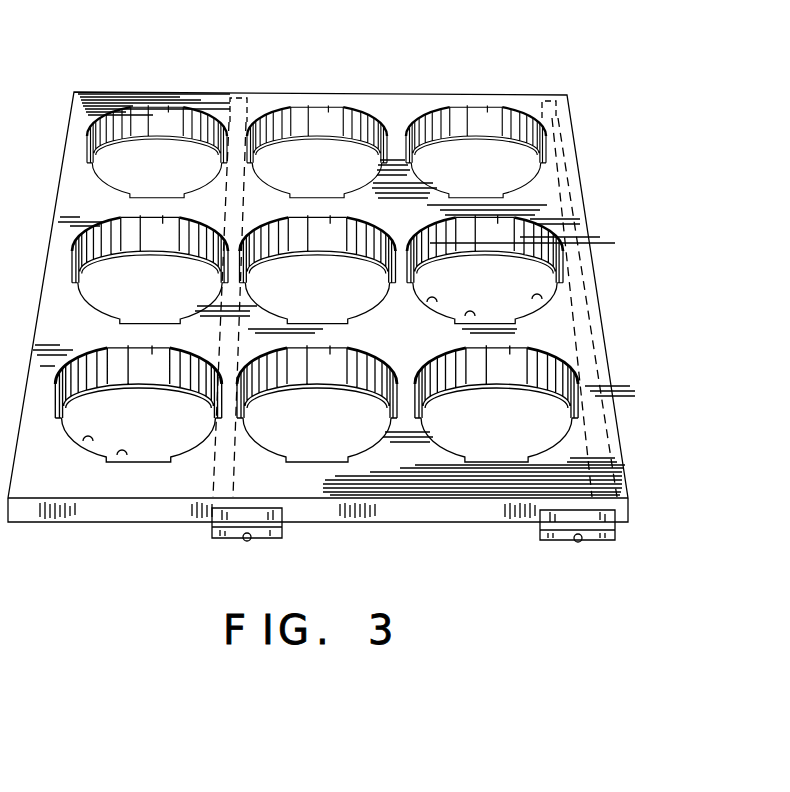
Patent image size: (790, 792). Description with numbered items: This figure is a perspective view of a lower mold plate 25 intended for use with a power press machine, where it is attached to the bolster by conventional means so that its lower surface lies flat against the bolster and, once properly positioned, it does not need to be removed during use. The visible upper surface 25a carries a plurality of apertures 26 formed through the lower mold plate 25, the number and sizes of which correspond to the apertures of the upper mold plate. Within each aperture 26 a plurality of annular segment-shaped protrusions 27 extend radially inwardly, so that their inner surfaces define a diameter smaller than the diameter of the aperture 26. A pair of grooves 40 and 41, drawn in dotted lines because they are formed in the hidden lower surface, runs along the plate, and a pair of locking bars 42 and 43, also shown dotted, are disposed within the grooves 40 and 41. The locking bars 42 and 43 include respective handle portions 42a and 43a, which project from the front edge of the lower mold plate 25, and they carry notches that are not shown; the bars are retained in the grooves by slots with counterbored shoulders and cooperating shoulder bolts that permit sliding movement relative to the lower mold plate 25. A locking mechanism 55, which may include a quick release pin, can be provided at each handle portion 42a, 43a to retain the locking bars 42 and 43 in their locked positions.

The lower mold plate 25 is at (622, 103).
The upper surface 25a is at (397, 105).
The apertures 26 is at (125, 456).
The annular segment-shaped protrusions 27 is at (180, 367).
The groove 40 is at (549, 97).
The groove 41 is at (228, 116).
The locking bar 42 is at (566, 206).
The locking bar 43 is at (262, 190).
The handle portion 42a is at (604, 541).
The handle portion 43a is at (218, 538).
The locking mechanism 55 is at (256, 550).